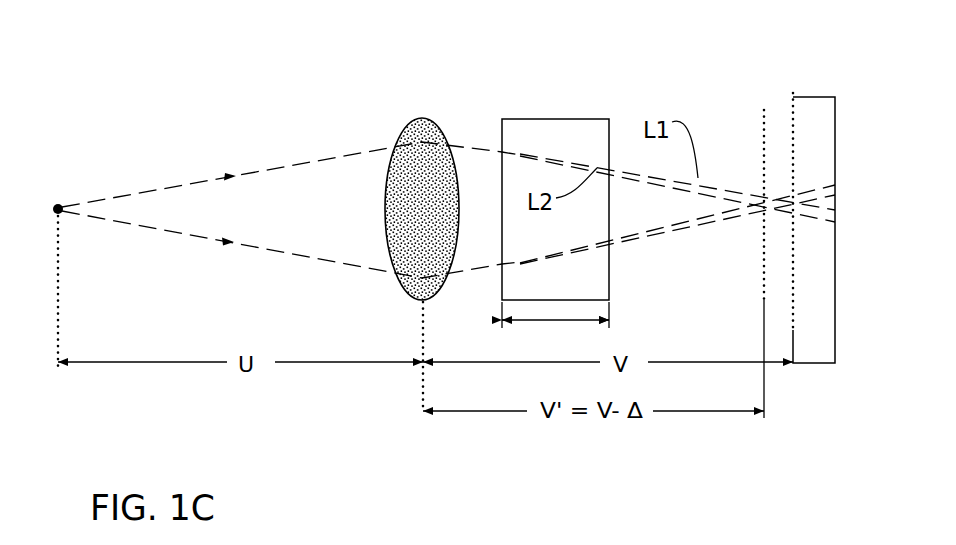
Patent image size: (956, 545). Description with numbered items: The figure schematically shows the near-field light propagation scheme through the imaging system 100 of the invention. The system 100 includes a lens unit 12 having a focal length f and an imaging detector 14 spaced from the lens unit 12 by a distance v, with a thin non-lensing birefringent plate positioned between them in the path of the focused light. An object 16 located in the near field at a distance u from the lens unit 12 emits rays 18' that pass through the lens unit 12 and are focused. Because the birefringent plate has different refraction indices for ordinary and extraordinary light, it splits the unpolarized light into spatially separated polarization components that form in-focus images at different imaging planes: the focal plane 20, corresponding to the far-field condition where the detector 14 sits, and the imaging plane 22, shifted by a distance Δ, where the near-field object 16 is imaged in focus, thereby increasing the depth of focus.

The imaging system 100 is at (216, 75).
The lens unit 12 is at (421, 117).
The imaging detector 14 is at (812, 148).
The object 16 is at (52, 212).
The rays 18' is at (448, 210).
The focal plane 20 is at (555, 119).
The imaging plane 22 is at (764, 110).